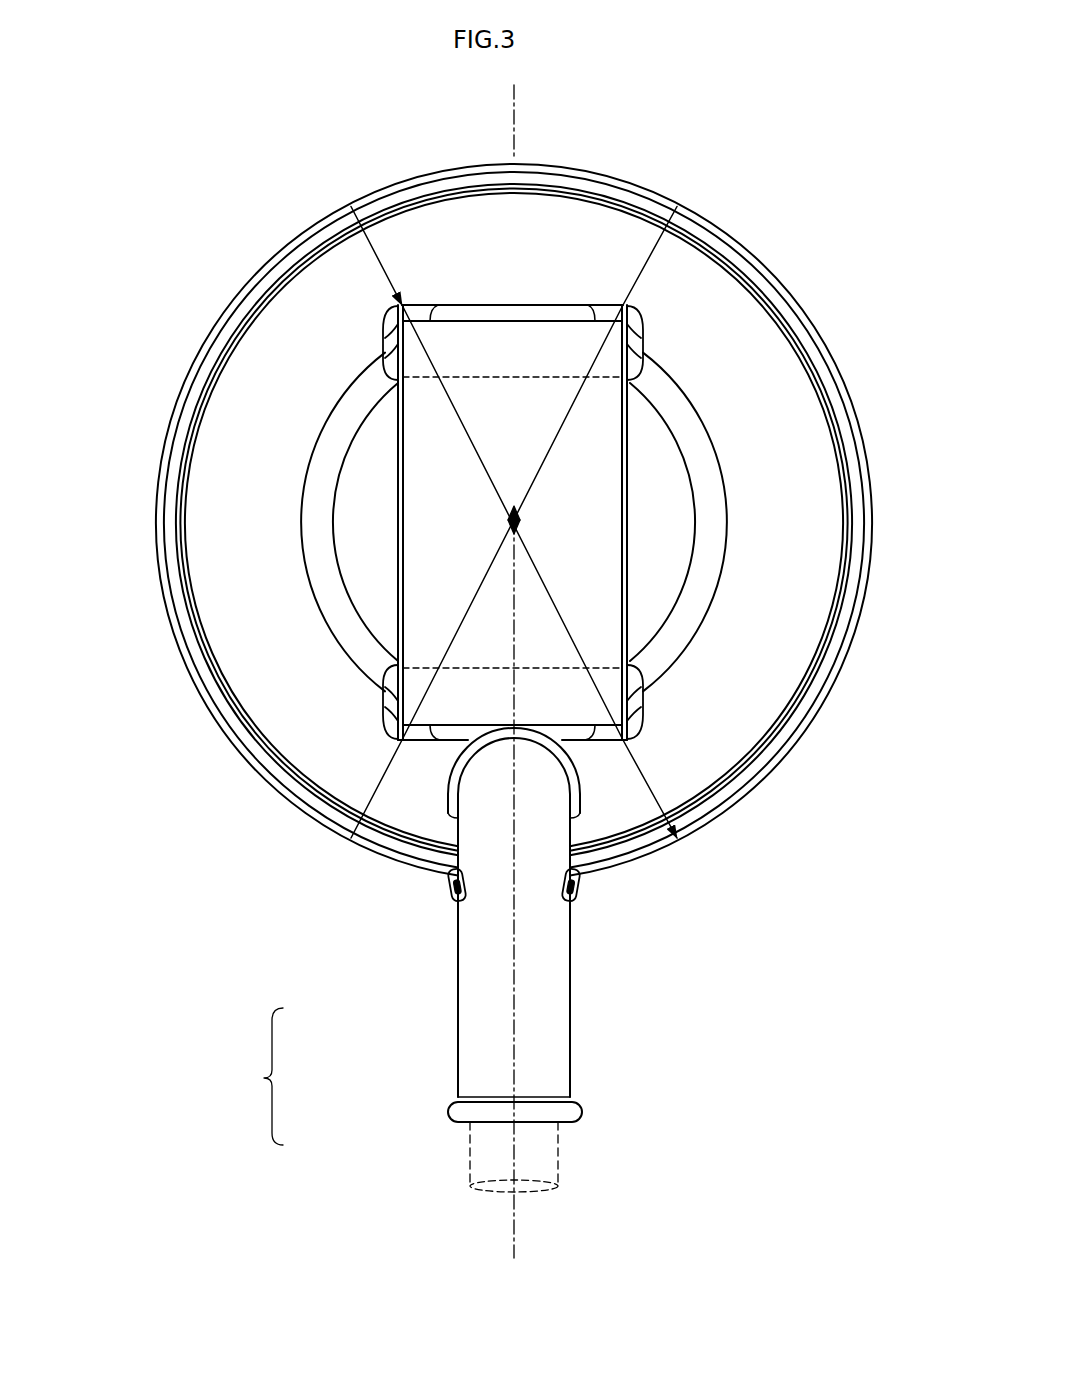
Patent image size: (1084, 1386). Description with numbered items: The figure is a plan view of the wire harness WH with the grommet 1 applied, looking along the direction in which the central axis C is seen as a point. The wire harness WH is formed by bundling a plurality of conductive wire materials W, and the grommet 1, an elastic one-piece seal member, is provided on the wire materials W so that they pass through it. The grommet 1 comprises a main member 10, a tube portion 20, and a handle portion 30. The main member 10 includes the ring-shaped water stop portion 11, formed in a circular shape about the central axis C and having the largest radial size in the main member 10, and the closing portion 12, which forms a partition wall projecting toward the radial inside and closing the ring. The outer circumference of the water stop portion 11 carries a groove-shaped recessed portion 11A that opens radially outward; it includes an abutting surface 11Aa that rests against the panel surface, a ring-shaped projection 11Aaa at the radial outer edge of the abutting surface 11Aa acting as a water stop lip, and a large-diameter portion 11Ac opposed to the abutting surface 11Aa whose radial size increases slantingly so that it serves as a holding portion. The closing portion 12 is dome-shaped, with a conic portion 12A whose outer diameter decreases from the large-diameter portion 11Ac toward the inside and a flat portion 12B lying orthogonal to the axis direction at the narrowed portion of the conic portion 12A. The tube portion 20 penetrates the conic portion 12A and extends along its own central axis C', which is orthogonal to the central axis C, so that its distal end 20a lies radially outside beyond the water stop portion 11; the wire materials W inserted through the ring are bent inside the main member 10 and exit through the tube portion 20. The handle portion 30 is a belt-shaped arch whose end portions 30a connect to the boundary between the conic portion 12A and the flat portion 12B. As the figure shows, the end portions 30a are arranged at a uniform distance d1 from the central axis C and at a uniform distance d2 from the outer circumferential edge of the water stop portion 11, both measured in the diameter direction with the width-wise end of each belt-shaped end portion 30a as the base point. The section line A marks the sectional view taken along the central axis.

The grommet 1 is at (440, 1050).
The main member 10 is at (287, 310).
The water stop portion 11 is at (632, 182).
The recessed portion 11A is at (699, 230).
The projection 11Aaa is at (728, 237).
The abutting surface 11Aa is at (743, 266).
The large-diameter portion 11Ac is at (765, 294).
The closing portion 12 is at (243, 378).
The conic portion 12A is at (230, 432).
The flat portion 12B is at (378, 527).
The tube portion 20 is at (575, 970).
The distal end 20a is at (572, 1122).
The handle portion 30 is at (633, 470).
The end portions 30a is at (467, 304).
The wire materials W is at (468, 1163).
The wire harness WH is at (253, 1076).
The central axis C is at (717, 880).
The central axis of tube portion C' is at (582, 1035).
The section line A is at (518, 103).
The distance d1 is at (485, 468).
The distance d2 is at (373, 262).